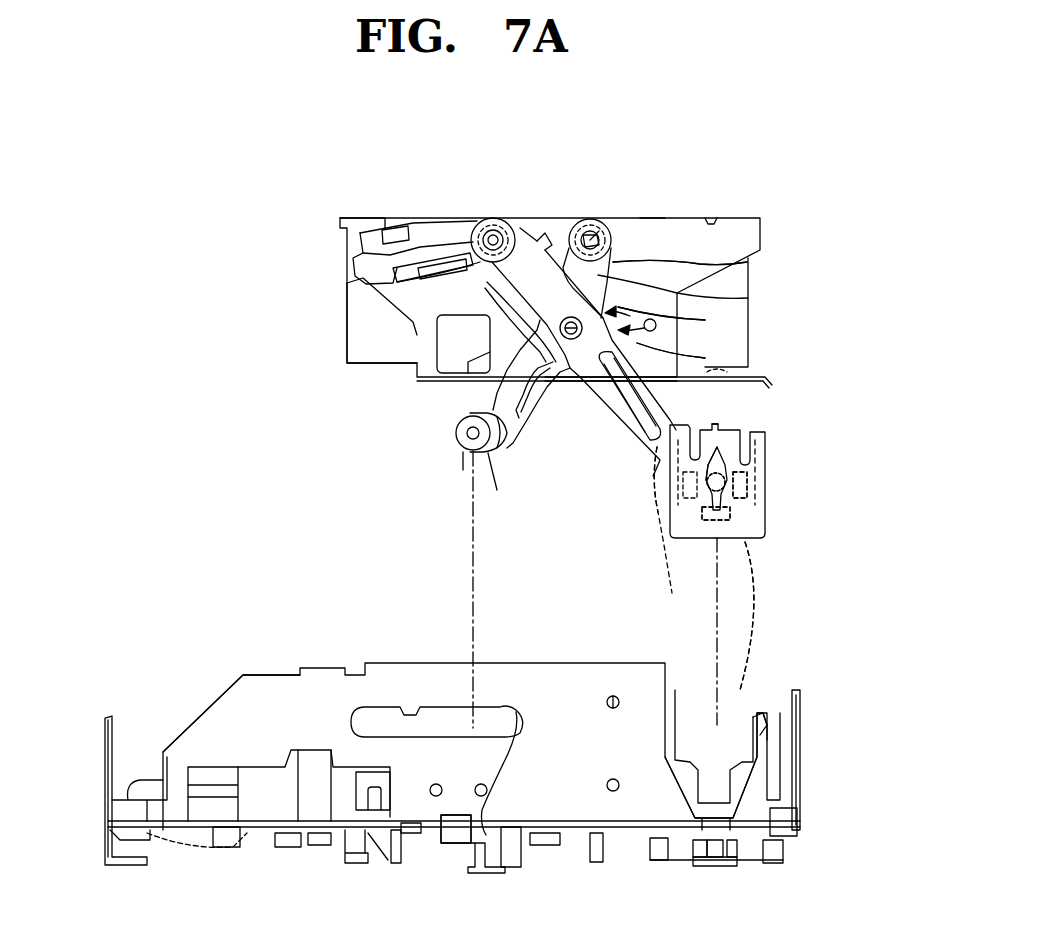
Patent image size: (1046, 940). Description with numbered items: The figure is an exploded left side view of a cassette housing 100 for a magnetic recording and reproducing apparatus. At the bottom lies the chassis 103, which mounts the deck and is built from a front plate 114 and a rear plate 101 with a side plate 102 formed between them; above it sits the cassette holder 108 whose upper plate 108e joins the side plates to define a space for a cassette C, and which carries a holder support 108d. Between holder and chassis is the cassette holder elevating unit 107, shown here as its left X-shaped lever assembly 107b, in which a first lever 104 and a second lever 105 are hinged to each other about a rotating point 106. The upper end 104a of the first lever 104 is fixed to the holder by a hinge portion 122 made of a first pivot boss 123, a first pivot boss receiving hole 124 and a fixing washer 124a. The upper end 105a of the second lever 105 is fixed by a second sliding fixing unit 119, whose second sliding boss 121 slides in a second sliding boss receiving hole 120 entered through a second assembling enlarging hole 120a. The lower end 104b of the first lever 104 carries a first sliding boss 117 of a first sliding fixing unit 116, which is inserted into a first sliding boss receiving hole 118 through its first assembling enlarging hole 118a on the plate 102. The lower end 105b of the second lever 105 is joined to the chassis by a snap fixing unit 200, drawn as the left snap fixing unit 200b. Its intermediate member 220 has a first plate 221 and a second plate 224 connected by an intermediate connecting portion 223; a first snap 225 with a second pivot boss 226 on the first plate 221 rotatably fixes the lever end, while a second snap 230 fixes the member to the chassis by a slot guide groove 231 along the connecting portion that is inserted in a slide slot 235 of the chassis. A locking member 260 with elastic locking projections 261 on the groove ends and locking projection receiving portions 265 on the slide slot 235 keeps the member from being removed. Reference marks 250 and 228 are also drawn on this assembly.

The cassette housing 100 is at (213, 124).
The cassette holder 108 is at (709, 212).
The upper plate 108e is at (655, 217).
The holder support 108d is at (773, 375).
The upper end of first lever 104a is at (742, 268).
The first lever 104 is at (742, 299).
The left X-shaped lever assembly 107b is at (705, 321).
The cassette holder elevating unit 107 is at (690, 342).
The rotating point 106 is at (690, 362).
The second sliding fixing unit 119 is at (470, 160).
The second sliding boss receiving hole 120 is at (410, 248).
The second assembling enlarging hole 120a is at (353, 258).
The second sliding boss 121 is at (482, 218).
The upper end of second lever 105a is at (492, 218).
The second lever 105 is at (372, 316).
The cassette C is at (347, 357).
The hinge portion 122 is at (640, 160).
The first pivot boss 123 is at (586, 220).
The first pivot boss receiving hole 124 is at (568, 222).
The fixing washer 124a is at (601, 226).
The first sliding boss 117 is at (452, 428).
The lower end of first lever 104b is at (498, 590).
The first sliding fixing unit 116 is at (360, 420).
The first sliding boss receiving hole 118 is at (410, 712).
The first assembling enlarging hole 118a is at (480, 873).
The intermediate member 220 is at (770, 530).
The snap fixing unit 200 is at (890, 430).
The left snap fixing unit 200b is at (885, 425).
The lower end of second lever 105b is at (686, 430).
The bracket top 250 is at (715, 432).
The elastic locking projection 261 is at (755, 436).
The first plate 221 is at (722, 455).
The second pivot boss 226 is at (728, 480).
The lower rib 228 is at (740, 505).
The first snap 225 is at (838, 478).
The intermediate connecting portion 223 is at (680, 538).
The second plate 224 is at (735, 538).
The locking member 260 is at (636, 578).
The second snap 230 is at (815, 592).
The slot guide groove 231 is at (740, 640).
The slide slot 235 is at (730, 670).
The locking projection receiving portion 265 is at (755, 738).
The chassis 103 is at (200, 690).
The side plate 102 is at (200, 730).
The rear plate 101 is at (105, 750).
The front plate 114 is at (800, 756).